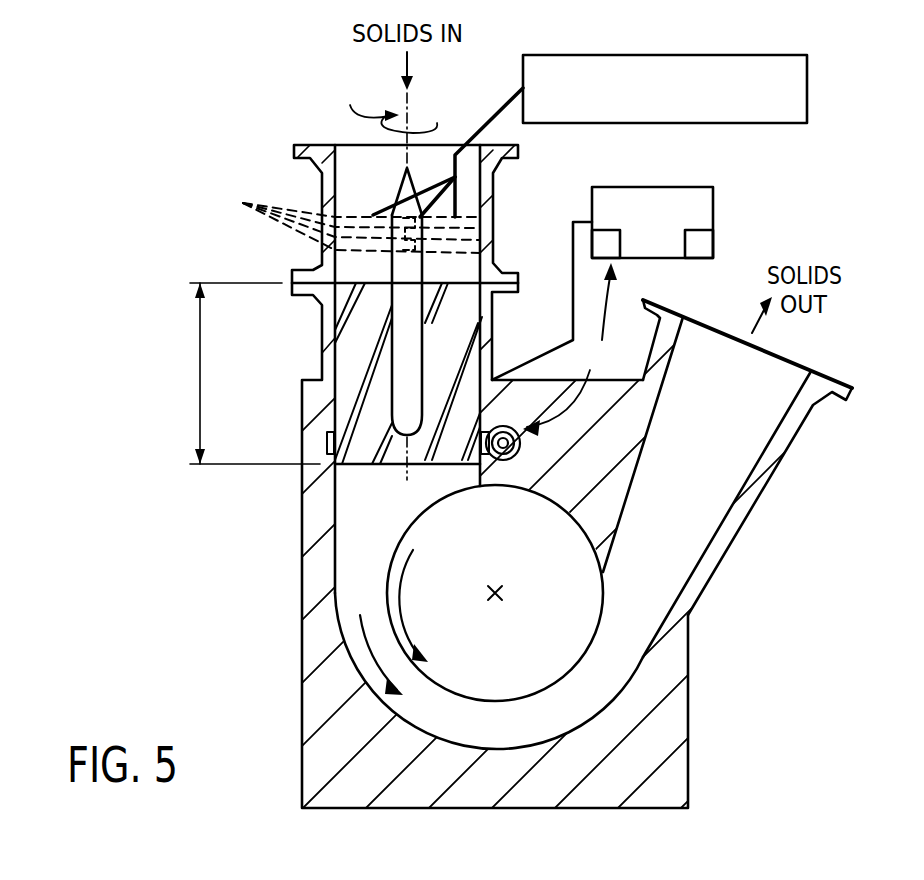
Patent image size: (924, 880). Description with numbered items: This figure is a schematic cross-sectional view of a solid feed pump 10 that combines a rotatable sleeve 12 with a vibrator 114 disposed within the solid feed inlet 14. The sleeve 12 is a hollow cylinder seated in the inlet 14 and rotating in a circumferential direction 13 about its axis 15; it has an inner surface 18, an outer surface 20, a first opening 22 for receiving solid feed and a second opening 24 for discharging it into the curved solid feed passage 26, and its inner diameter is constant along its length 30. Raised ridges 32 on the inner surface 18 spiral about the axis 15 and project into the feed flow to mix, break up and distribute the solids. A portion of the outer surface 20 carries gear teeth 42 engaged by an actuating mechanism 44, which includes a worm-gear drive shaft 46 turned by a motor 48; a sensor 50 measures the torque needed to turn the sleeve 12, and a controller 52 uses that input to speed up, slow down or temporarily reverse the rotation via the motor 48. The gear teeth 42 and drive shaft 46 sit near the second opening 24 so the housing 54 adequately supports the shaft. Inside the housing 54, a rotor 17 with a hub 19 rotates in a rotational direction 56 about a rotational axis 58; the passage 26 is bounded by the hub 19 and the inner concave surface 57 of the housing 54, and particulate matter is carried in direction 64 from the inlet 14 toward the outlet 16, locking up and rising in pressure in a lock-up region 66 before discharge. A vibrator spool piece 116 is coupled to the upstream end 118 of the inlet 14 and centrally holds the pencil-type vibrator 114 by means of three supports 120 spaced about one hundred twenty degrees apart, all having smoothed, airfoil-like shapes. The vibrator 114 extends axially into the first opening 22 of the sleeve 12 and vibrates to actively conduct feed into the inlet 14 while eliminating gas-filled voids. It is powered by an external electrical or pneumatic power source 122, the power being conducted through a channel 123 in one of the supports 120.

The solid feed pump 10 is at (258, 115).
The rotatable sleeve 12 is at (462, 322).
The circumferential direction 13 is at (370, 99).
The inlet 14 is at (292, 290).
The axis 15 is at (410, 110).
The outlet 16 is at (850, 395).
The rotor 17 is at (545, 672).
The inner surface 18 is at (453, 350).
The hub 19 is at (495, 702).
The outer surface 20 is at (481, 380).
The first opening 22 is at (467, 240).
The second opening 24 is at (362, 466).
The solid feed passage 26 is at (355, 588).
The length 30 is at (197, 370).
The raised ridges 32 is at (392, 422).
The gear teeth 42 is at (327, 435).
The actuating mechanism 44 is at (555, 329).
The drive shaft 46 is at (510, 458).
The motor 48 is at (683, 187).
The sensor 50 is at (703, 228).
The controller 52 is at (622, 243).
The housing 54 is at (308, 697).
The rotational direction 56 is at (407, 600).
The inner concave surface 57 is at (467, 748).
The rotational axis 58 is at (507, 593).
The direction 64 is at (368, 648).
The lock-up region 66 is at (427, 722).
The vibrator 114 is at (400, 275).
The vibrator spool piece 116 is at (495, 188).
The upstream end 118 is at (518, 288).
The supports 120 is at (341, 220).
The power source 122 is at (807, 85).
The channel 123 is at (462, 278).